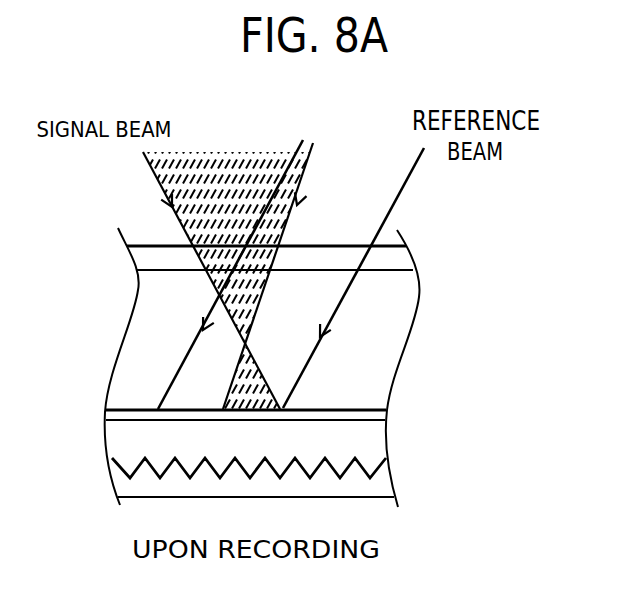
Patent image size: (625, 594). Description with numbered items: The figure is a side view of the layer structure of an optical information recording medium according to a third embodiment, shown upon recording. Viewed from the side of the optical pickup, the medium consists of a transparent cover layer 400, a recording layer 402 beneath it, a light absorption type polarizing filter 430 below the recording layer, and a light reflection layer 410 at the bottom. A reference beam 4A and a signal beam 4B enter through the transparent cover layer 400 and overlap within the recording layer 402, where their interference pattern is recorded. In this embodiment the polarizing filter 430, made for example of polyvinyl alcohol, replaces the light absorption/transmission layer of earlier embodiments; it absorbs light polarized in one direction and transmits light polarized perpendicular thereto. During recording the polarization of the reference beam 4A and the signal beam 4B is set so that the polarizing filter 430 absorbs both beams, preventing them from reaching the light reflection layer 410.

The transparent cover layer 400 is at (395, 260).
The recording layer 402 is at (395, 347).
The light absorption type polarizing filter 430 is at (372, 415).
The light reflection layer 410 is at (397, 450).
The reference beam 4A is at (352, 172).
The signal beam 4B is at (246, 173).